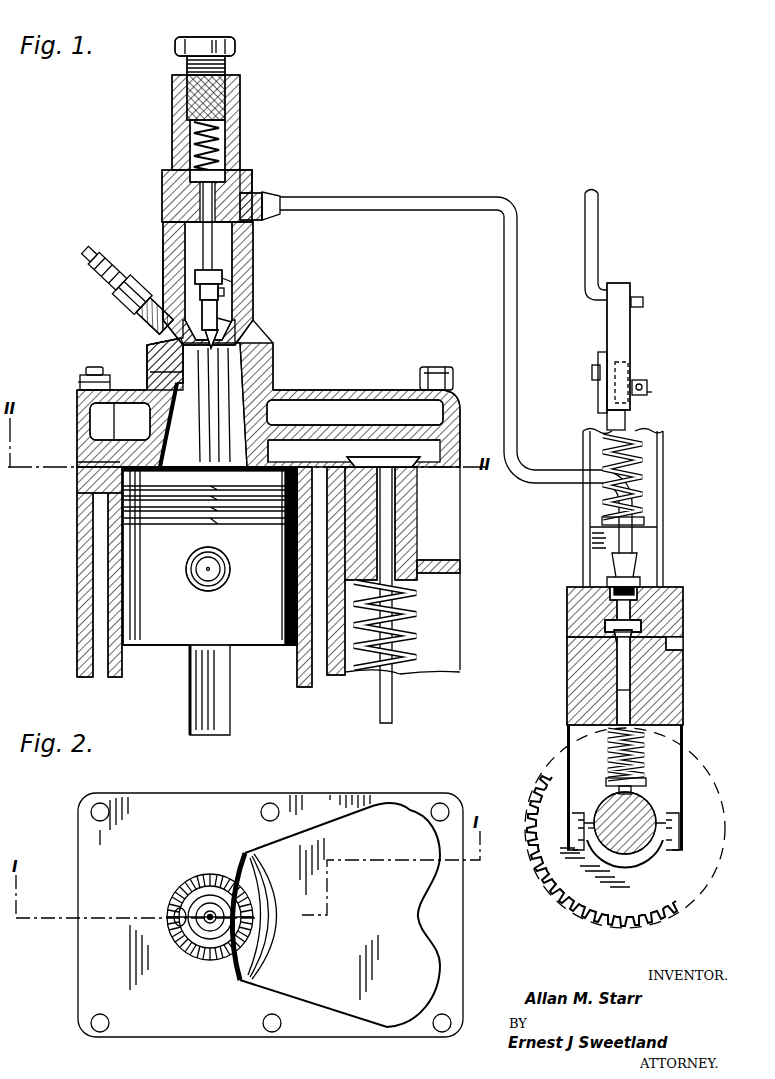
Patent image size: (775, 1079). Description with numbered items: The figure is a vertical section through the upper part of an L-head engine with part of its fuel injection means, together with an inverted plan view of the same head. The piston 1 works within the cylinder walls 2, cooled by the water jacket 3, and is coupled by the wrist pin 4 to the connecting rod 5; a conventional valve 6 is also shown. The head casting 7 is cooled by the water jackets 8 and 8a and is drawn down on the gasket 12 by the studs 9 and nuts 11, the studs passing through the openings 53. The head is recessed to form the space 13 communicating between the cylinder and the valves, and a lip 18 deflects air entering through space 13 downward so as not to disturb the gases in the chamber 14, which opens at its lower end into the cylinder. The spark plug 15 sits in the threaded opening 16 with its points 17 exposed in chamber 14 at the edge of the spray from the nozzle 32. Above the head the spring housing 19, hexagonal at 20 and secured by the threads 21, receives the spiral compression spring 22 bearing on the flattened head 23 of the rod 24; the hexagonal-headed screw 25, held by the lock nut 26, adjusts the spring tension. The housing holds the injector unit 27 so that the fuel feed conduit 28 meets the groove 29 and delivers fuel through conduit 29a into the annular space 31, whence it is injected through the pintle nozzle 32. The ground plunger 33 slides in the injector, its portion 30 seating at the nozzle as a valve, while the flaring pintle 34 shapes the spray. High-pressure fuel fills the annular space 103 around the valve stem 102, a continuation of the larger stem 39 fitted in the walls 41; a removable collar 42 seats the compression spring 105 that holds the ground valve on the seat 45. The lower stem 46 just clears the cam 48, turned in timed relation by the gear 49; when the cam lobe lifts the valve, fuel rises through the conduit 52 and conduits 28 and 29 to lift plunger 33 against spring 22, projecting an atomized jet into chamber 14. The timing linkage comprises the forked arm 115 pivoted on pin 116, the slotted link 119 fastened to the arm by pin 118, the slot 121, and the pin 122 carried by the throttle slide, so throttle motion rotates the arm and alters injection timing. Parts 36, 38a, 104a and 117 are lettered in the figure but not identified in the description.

In FIG. 1, the piston 1 is at (262, 548).
In FIG. 1, the cylinder walls 2 is at (297, 660).
In FIG. 1, the water jacket 3 is at (268, 577).
In FIG. 1, the wrist pin 4 is at (192, 580).
In FIG. 1, the connecting rod 5 is at (222, 716).
In FIG. 1, the valve 6 is at (394, 480).
In FIG. 1, the head casting 7 is at (342, 390).
In FIG. 1, the water jacket 8 is at (350, 414).
In FIG. 1, the water jacket 8a is at (120, 421).
In FIG. 1, the studs 9 is at (92, 367).
In FIG. 1, the nuts 11 is at (82, 380).
In FIG. 1, the gasket 12 is at (77, 462).
In FIG. 1, the space 13 is at (354, 452).
In FIG. 2, the space 13 is at (340, 915).
In FIG. 1, the chamber 14 is at (222, 428).
In FIG. 2, the chamber 14 is at (219, 960).
In FIG. 1, the spark plug 15 is at (97, 273).
In FIG. 1, the threaded opening 16 is at (145, 348).
In FIG. 1, the points 17 is at (150, 372).
In FIG. 2, the points 17 is at (178, 926).
In FIG. 1, the lip 18 is at (294, 390).
In FIG. 2, the lip 18 is at (262, 882).
In FIG. 1, the spring housing 19 is at (241, 126).
In FIG. 1, the hexagonal portion 20 is at (252, 184).
In FIG. 1, the threads 21 is at (254, 252).
In FIG. 1, the spiral compression spring 22 is at (190, 152).
In FIG. 1, the flattened head 23 is at (165, 190).
In FIG. 1, the rod 24 is at (200, 208).
In FIG. 1, the hexagonal-headed screw 25 is at (237, 46).
In FIG. 1, the lock nut 26 is at (227, 82).
In FIG. 1, the injector unit 27 is at (172, 270).
In FIG. 1, the fuel feed conduit 28 is at (223, 281).
In FIG. 1, the groove 29 is at (282, 274).
In FIG. 1, the conduit 29a is at (219, 292).
In FIG. 1, the portion of plunger 30 is at (302, 327).
In FIG. 1, the annular space 31 is at (218, 318).
In FIG. 1, the pintle nozzle 32 is at (262, 356).
In FIG. 1, the plunger 33 is at (290, 299).
In FIG. 1, the pintle 34 is at (213, 349).
In FIG. 2, the pintle 34 is at (212, 898).
In FIG. 1, the pivot pin 36 is at (648, 390).
In FIG. 1, the ball cradle 38a is at (645, 855).
In FIG. 1, the larger stem 39 is at (610, 742).
In FIG. 1, the walls 41 is at (610, 776).
In FIG. 1, the removable collar 42 is at (585, 800).
In FIG. 1, the seat 45 is at (616, 640).
In FIG. 1, the valve stem lower end 46 is at (605, 815).
In FIG. 1, the cam 48 is at (655, 820).
In FIG. 1, the gear 49 is at (695, 900).
In FIG. 1, the conduit 52 is at (288, 197).
In FIG. 2, the openings 53 is at (441, 803).
In FIG. 1, the valve stem 102 is at (617, 662).
In FIG. 1, the annular space 103 is at (617, 690).
In FIG. 1, the valve seat 104a is at (607, 630).
In FIG. 1, the compression spring 105 is at (683, 742).
In FIG. 1, the forked arm 115 is at (600, 352).
In FIG. 1, the pin 116 is at (600, 288).
In FIG. 1, the pump spring 117 is at (627, 420).
In FIG. 1, the pin 118 is at (592, 372).
In FIG. 1, the slotted link 119 is at (626, 335).
In FIG. 1, the slot 121 is at (630, 376).
In FIG. 1, the pin 122 is at (650, 393).